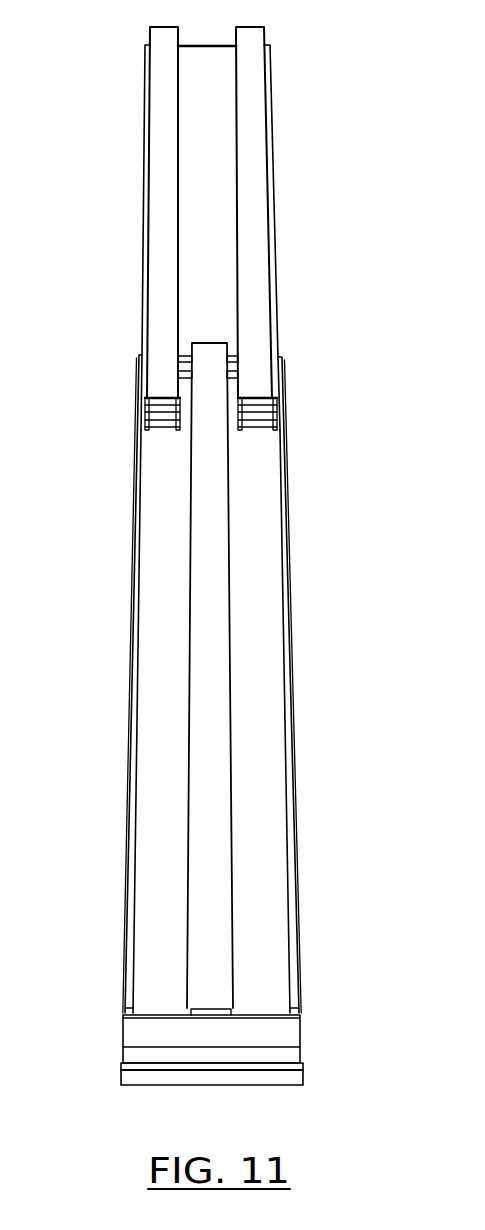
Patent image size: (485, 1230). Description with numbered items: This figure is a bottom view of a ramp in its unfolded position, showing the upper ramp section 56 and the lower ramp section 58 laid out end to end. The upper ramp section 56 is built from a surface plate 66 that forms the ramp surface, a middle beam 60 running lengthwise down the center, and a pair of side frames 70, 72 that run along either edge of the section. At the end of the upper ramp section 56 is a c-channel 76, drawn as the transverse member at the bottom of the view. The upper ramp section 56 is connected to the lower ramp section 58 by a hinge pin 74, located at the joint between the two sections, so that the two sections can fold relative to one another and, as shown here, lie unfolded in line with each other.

The upper ramp section 56 is at (134, 520).
The lower ramp section 58 is at (142, 127).
The middle beam 60 is at (203, 612).
The surface plate 66 is at (168, 612).
The side frame 70 is at (135, 718).
The side frame 72 is at (288, 715).
The hinge pin 74 is at (240, 372).
The c-channel 76 is at (153, 1052).